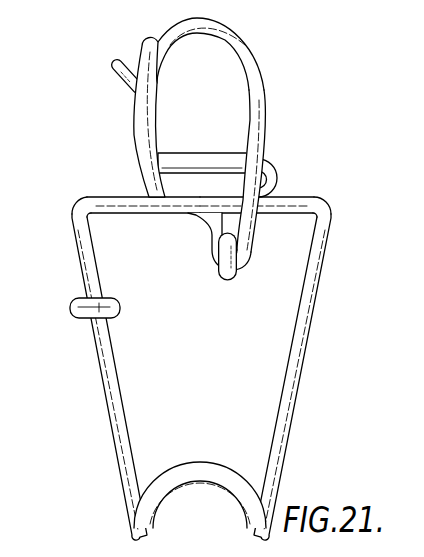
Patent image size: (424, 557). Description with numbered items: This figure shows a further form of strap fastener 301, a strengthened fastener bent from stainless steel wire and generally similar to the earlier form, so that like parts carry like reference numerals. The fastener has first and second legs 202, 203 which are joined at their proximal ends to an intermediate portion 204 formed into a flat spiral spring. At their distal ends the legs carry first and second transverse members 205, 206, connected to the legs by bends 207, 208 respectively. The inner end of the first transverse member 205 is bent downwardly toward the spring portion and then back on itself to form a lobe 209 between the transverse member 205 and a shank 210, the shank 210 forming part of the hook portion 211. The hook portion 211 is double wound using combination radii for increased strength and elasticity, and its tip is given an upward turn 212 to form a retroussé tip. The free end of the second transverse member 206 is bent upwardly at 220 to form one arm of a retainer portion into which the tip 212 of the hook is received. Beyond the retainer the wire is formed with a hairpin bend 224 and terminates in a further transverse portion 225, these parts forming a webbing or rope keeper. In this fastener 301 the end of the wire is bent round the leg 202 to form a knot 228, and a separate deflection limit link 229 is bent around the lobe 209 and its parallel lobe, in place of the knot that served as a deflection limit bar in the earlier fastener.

The first leg 202 is at (103, 343).
The second leg 203 is at (312, 283).
The intermediate portion 204 is at (240, 486).
The first transverse member 205 is at (116, 198).
The second transverse member 206 is at (306, 203).
The bend 207 is at (81, 205).
The bend 208 is at (333, 221).
The lobe 209 is at (246, 249).
The shank 210 is at (256, 133).
The hook portion 211 is at (244, 63).
The retroussé tip 212 is at (117, 73).
The arm 220 is at (142, 116).
The hairpin bend 224 is at (277, 175).
The further transverse portion 225 is at (202, 160).
The knot 228 is at (72, 306).
The deflection limit link 229 is at (224, 249).
The fastener 301 is at (312, 347).